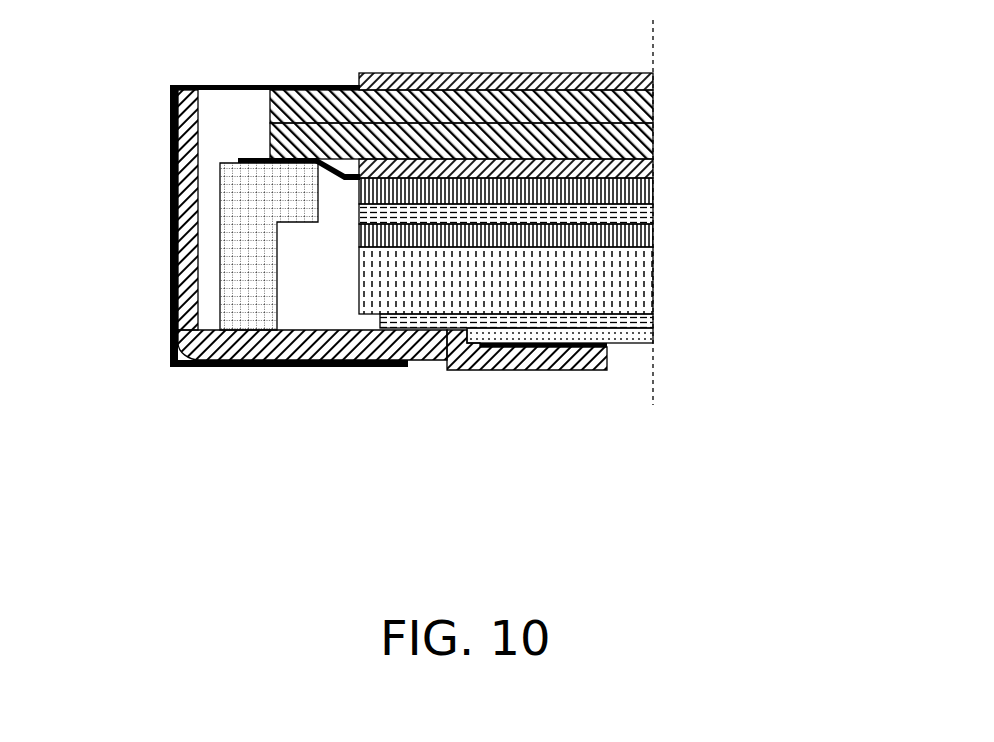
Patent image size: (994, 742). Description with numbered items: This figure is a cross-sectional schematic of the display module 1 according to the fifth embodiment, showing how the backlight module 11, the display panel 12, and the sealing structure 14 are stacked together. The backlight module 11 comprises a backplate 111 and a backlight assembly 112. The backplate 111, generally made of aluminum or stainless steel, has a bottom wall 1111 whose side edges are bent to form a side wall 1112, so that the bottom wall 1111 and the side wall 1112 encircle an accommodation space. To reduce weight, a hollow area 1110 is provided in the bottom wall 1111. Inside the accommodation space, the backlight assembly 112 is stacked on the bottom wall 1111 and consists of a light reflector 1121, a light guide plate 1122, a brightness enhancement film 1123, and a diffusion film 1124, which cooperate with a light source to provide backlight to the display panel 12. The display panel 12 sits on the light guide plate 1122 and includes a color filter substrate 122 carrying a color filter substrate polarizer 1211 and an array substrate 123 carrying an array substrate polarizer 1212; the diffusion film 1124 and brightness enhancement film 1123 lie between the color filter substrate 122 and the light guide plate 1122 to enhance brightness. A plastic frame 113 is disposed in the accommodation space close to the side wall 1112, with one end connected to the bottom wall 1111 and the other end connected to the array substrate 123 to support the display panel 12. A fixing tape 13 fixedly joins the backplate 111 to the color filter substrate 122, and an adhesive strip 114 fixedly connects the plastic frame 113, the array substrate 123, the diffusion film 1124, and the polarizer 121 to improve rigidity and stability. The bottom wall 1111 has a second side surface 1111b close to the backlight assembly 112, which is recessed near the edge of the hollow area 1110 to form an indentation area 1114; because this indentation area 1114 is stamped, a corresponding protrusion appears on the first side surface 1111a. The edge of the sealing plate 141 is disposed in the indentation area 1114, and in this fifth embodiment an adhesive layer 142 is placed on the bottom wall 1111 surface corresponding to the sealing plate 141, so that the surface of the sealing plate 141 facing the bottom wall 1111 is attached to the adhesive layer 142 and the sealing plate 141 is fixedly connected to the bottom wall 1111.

The display module 1 is at (362, 492).
The backlight module 11 is at (143, 392).
The backplate 111 is at (62, 258).
The bottom wall 1111 is at (178, 340).
The first side surface 1111a is at (538, 370).
The second side surface 1111b is at (310, 365).
The side wall 1112 is at (178, 272).
The indentation area 1114 is at (475, 336).
The hollow area 1110 is at (633, 354).
The backlight assembly 112 is at (776, 200).
The light reflector 1121 is at (655, 320).
The light guide plate 1122 is at (613, 283).
The brightness enhancement film 1123 is at (655, 212).
The diffusion film 1124 is at (655, 190).
The plastic frame 113 is at (257, 193).
The adhesive strip 114 is at (238, 160).
The display panel 12 is at (782, 82).
The polarizer 121 is at (799, 422).
The color filter substrate polarizer 1211 is at (655, 75).
The array substrate polarizer 1212 is at (655, 163).
The color filter substrate 122 is at (655, 102).
The array substrate 123 is at (655, 135).
The fixing tape 13 is at (172, 86).
The sealing structure 14 is at (802, 500).
The sealing plate 141 is at (655, 334).
The adhesive layer 142 is at (580, 372).